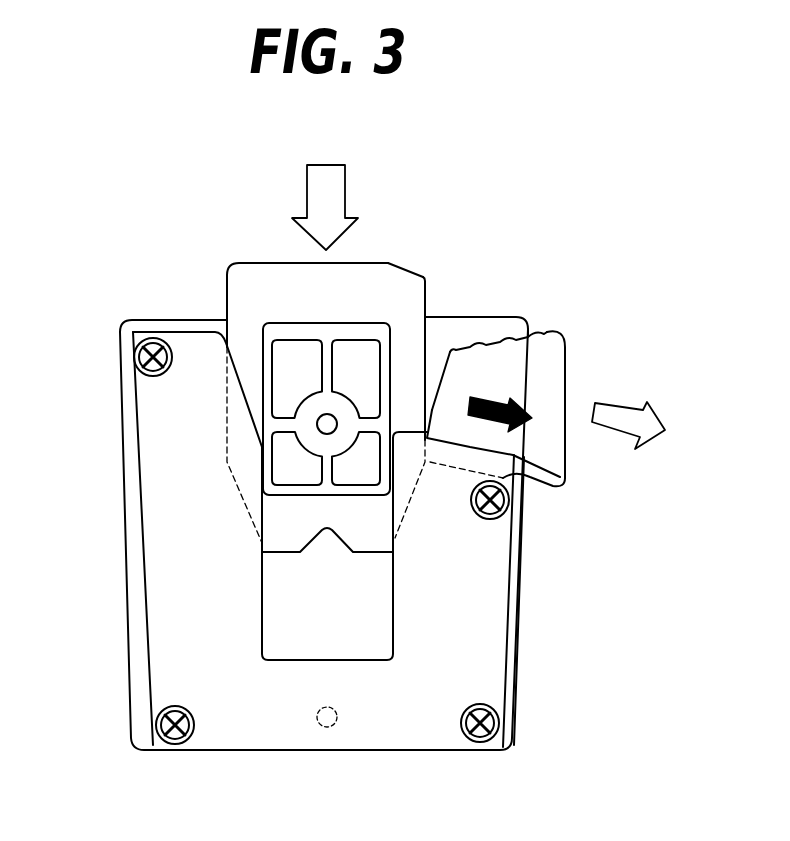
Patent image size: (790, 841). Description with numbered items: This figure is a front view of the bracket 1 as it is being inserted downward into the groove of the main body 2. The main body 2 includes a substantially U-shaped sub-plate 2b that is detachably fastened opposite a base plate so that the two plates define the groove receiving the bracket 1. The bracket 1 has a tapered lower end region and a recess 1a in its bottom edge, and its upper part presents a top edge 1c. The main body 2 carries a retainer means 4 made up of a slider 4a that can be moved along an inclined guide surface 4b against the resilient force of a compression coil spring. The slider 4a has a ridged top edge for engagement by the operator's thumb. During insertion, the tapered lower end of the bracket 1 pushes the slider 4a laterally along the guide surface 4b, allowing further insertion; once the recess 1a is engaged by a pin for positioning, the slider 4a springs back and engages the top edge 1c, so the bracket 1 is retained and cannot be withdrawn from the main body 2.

The bracket 1 is at (363, 255).
The recess 1a is at (338, 545).
The top edge 1c is at (413, 268).
The main body 2 is at (126, 467).
The sub-plate 2b is at (276, 722).
The retainer means 4 is at (543, 384).
The slider 4a is at (535, 370).
The inclined guide surface 4b is at (563, 476).